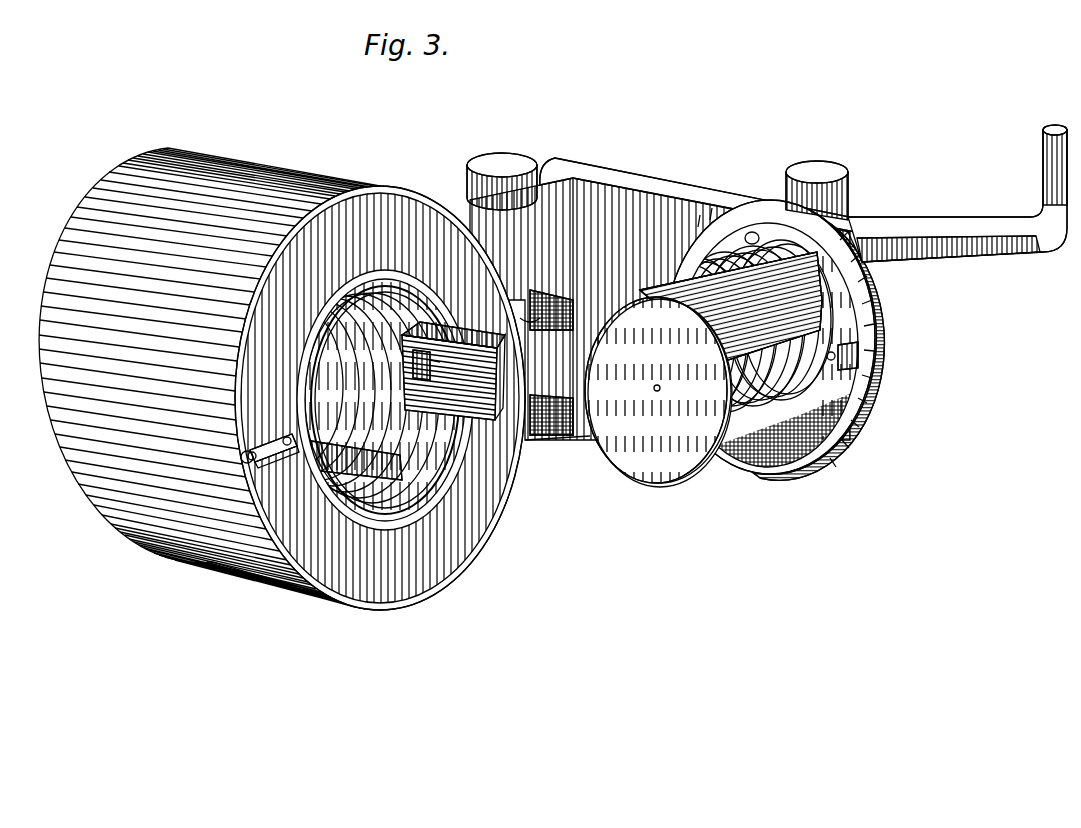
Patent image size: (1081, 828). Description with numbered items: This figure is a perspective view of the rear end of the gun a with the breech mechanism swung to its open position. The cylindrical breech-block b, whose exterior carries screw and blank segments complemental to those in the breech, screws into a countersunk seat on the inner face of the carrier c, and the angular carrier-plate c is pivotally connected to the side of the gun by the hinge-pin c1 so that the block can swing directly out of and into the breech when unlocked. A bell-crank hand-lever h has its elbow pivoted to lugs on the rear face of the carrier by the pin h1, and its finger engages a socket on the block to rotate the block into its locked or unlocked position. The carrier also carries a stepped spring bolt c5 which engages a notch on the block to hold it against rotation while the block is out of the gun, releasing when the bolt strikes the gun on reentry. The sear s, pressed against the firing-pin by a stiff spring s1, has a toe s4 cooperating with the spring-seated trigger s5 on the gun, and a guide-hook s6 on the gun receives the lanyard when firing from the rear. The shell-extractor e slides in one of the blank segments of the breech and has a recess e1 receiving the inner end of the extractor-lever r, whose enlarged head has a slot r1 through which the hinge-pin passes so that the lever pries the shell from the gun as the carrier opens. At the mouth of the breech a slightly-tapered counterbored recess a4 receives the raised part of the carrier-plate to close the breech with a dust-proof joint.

The gun a is at (480, 535).
The counterbored recess a4 is at (455, 470).
The breech-block b is at (612, 433).
The carrier c is at (722, 190).
The hinge-pin c1 is at (496, 163).
The spring bolt c5 is at (759, 238).
The shell-extractor e is at (453, 371).
The recess e1 is at (424, 380).
The hand-lever h is at (937, 220).
The pin h1 is at (848, 185).
The extractor-lever r is at (439, 366).
The slot r1 is at (522, 322).
The sear s is at (874, 343).
The spring s1 is at (843, 345).
The toe s4 is at (272, 447).
The trigger s5 is at (277, 465).
The guide-hook s6 is at (251, 436).